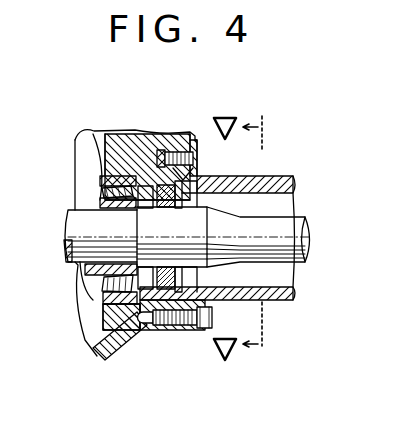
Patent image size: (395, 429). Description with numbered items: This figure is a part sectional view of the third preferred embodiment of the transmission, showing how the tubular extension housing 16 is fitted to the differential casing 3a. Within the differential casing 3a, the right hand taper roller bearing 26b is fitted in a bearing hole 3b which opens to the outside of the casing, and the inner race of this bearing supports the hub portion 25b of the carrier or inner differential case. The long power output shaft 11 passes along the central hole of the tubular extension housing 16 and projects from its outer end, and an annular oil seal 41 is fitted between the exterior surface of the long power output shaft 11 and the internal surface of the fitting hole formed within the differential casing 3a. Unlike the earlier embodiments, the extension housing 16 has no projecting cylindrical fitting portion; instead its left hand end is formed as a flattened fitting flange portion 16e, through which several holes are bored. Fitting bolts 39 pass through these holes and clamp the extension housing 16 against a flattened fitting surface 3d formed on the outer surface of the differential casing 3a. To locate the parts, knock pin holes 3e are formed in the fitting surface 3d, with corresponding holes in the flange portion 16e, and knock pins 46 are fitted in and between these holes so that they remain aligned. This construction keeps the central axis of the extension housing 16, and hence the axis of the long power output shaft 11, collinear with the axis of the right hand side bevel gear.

The knock pin hole 3e is at (161, 152).
The knock pin 46 is at (182, 143).
The tubular extension housing 16 is at (279, 186).
The oil seal 41 is at (183, 199).
The long power output shaft 11 is at (300, 217).
The hub portion 25b is at (98, 213).
The taper roller bearing 26b is at (103, 294).
The bearing hole 3b is at (105, 306).
The differential casing 3a is at (113, 353).
The flattened fitting surface 3d is at (144, 326).
The flattened fitting flange portion 16e is at (190, 327).
The fitting bolt 39 is at (211, 318).